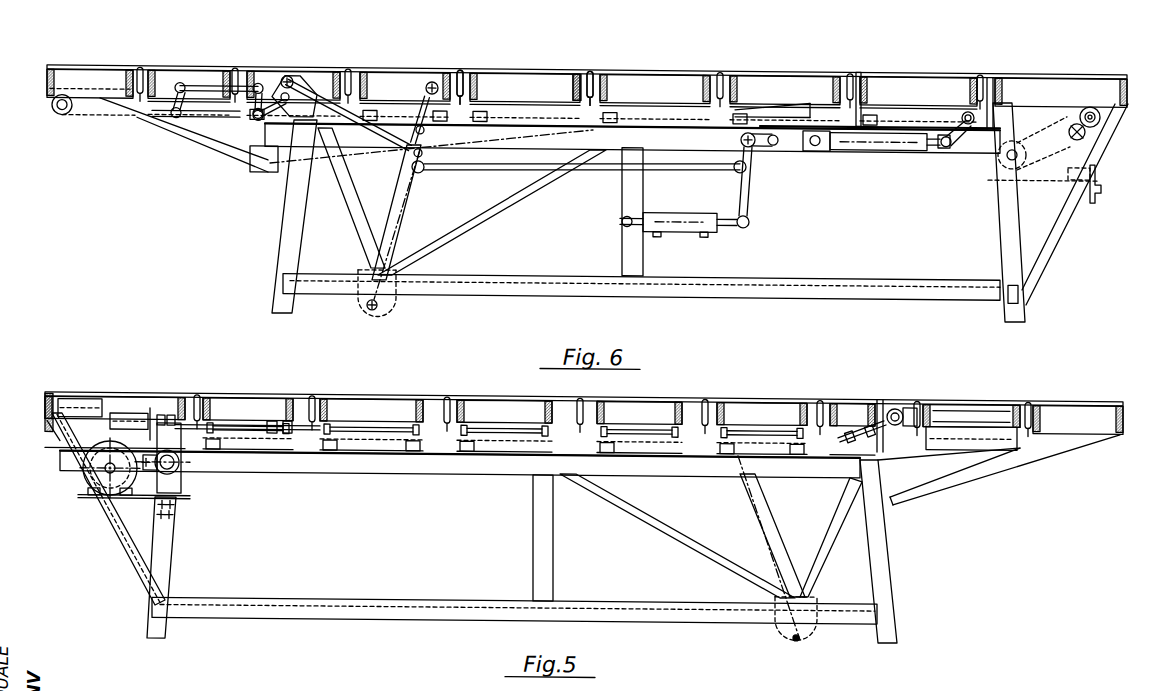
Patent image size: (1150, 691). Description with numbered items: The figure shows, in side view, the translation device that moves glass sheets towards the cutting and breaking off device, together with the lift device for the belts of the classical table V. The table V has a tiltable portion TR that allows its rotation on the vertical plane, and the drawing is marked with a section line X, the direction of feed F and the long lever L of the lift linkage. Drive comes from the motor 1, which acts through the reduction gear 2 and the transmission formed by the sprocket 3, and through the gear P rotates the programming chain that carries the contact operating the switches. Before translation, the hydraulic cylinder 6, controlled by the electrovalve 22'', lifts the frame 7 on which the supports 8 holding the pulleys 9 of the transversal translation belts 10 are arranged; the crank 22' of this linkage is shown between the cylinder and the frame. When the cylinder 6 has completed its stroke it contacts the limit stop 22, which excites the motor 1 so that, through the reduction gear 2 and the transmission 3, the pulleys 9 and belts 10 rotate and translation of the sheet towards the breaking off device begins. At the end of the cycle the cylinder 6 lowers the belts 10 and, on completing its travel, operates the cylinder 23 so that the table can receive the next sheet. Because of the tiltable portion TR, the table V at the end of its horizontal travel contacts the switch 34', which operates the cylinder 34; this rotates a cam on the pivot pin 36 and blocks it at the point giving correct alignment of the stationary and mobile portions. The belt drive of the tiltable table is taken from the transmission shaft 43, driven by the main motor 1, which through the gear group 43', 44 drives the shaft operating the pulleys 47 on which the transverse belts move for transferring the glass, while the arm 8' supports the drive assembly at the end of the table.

In FIG. 5, the motor 1 is at (105, 504).
In FIG. 5, the reduction gear 2 is at (176, 495).
In FIG. 5, the sprocket 3 is at (158, 408).
In FIG. 6, the hydraulic cylinder 6 is at (694, 226).
In FIG. 6, the frame 7 is at (840, 115).
In FIG. 6, the supports 8 is at (775, 82).
In FIG. 6, the support arm 8' is at (894, 76).
In FIG. 5, the support arm 8' is at (889, 406).
In FIG. 6, the pulleys 9 is at (581, 75).
In FIG. 6, the transversal translation belts 10 is at (461, 64).
In FIG. 6, the limit stop 22 is at (600, 186).
In FIG. 6, the crank pivot 22' is at (764, 160).
In FIG. 6, the electrovalve 22'' is at (793, 161).
In FIG. 6, the cylinder 23 is at (405, 179).
In FIG. 6, the cylinder 34 is at (876, 176).
In FIG. 6, the switch 34' is at (949, 155).
In FIG. 6, the pivot pin 36 is at (961, 108).
In FIG. 5, the transmission shaft 43 is at (862, 441).
In FIG. 5, the gear group 43' is at (247, 434).
In FIG. 5, the gears 44 is at (904, 402).
In FIG. 5, the pulleys 47 is at (935, 395).
In FIG. 6, the lever L is at (392, 156).
In FIG. 6, the feed direction F is at (398, 48).
In FIG. 6, the classical table V is at (675, 62).
In FIG. 5, the classical table V is at (675, 390).
In FIG. 6, the section line X- X is at (983, 57).
In FIG. 6, the tiltable portion TR is at (46, 32).
In FIG. 5, the gear P is at (56, 424).